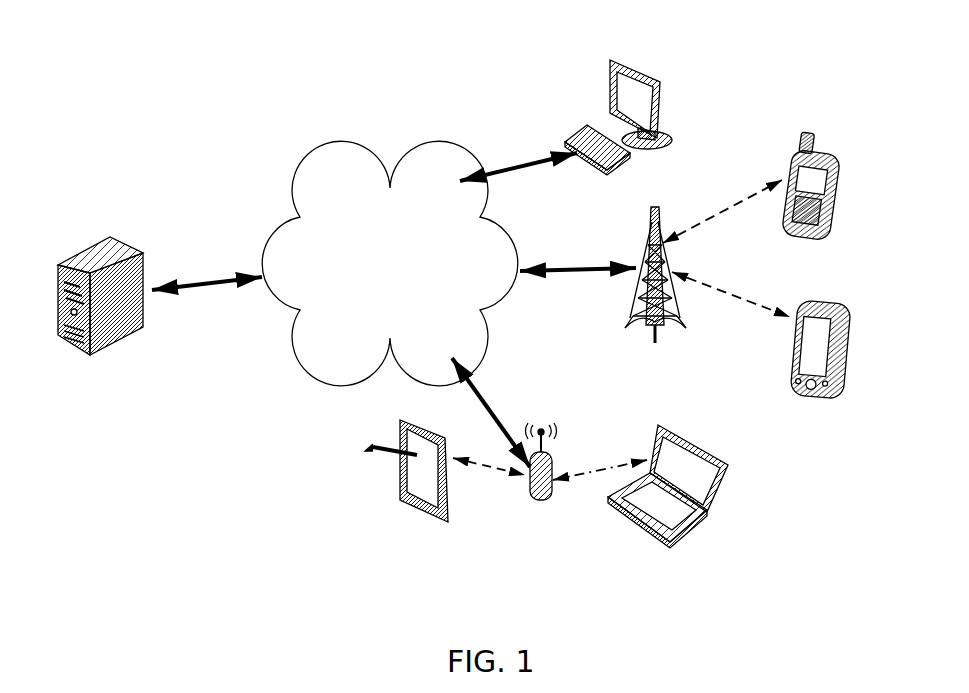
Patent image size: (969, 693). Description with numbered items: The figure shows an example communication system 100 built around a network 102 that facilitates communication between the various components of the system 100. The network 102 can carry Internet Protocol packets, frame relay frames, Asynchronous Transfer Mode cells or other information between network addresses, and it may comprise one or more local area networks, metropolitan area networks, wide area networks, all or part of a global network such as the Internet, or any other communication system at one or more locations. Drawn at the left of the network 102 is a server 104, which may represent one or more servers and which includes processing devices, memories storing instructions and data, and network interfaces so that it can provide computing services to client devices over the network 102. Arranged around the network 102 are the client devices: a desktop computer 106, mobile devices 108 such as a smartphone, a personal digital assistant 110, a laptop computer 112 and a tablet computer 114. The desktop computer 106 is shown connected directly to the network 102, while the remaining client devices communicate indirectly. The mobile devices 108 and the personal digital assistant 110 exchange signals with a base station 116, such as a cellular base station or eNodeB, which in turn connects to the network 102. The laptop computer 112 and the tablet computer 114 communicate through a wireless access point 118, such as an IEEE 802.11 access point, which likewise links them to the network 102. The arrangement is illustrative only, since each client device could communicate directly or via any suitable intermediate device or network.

The system 100 is at (176, 94).
The network 102 is at (308, 182).
The server 104 is at (84, 251).
The desktop computer 106 is at (608, 79).
The mobile devices 108 is at (837, 176).
The personal digital assistant 110 is at (827, 312).
The laptop computer 112 is at (730, 473).
The tablet computer 114 is at (402, 421).
The base station 116 is at (680, 304).
The wireless access point 118 is at (560, 431).